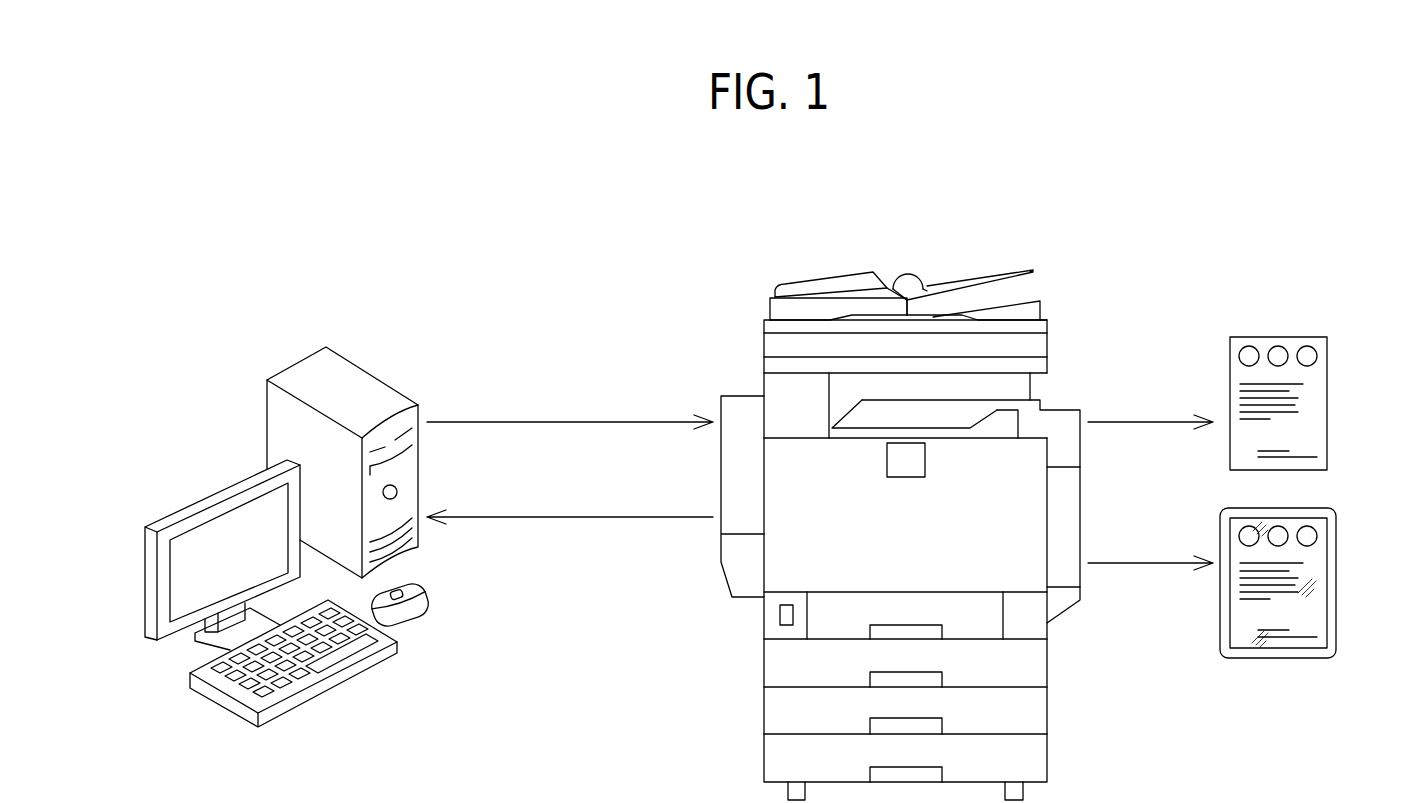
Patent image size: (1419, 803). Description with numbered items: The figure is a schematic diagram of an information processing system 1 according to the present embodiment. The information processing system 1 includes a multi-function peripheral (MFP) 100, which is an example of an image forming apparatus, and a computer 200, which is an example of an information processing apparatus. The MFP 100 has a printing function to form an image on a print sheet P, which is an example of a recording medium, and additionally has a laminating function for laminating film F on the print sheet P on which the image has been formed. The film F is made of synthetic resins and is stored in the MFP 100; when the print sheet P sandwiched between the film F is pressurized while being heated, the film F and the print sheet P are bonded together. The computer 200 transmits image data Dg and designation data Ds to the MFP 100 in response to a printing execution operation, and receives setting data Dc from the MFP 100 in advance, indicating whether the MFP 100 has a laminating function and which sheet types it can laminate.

The information processing system 1 is at (549, 238).
The multi-function peripheral (MFP) 100 is at (1012, 272).
The computer 200 is at (348, 357).
The print sheet P is at (1327, 400).
The film F is at (1336, 553).